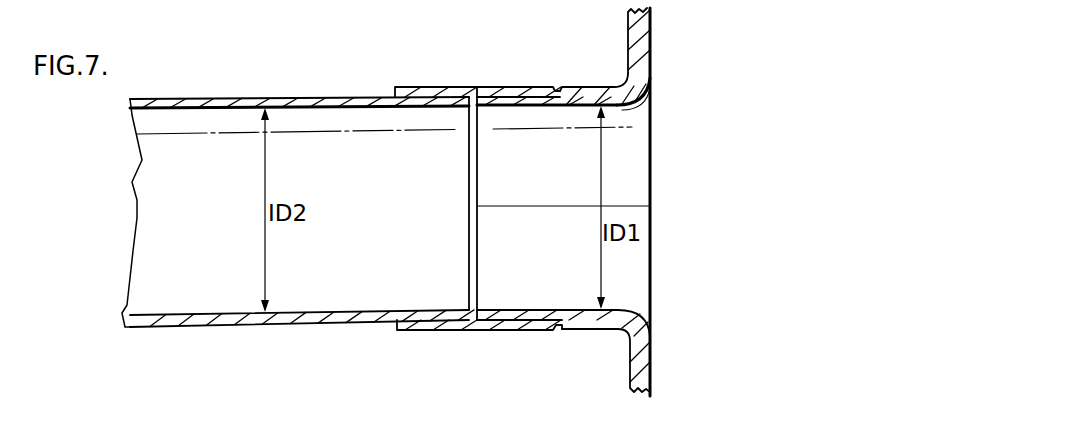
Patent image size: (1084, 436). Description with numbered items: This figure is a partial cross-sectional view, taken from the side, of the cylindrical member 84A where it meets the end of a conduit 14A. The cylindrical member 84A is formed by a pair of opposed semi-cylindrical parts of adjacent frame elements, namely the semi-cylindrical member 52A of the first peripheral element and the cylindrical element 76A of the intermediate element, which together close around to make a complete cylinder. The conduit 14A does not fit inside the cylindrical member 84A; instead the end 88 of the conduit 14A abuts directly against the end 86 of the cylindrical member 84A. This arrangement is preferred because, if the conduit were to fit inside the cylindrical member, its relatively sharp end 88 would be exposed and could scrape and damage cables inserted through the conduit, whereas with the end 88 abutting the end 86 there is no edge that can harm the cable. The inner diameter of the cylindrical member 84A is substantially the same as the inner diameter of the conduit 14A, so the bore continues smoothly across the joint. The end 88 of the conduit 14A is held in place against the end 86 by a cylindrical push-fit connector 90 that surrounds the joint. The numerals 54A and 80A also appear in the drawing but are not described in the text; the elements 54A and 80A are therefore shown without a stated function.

The conduit 14A is at (164, 90).
The cylindrical push-fit connector 90 is at (429, 80).
The cylindrical element of intermediate element 76A is at (560, 332).
The end of the conduit 88 is at (455, 116).
The end of the cylindrical member 86 is at (484, 117).
The semi-cylindrical member of first peripheral element 52A is at (561, 80).
The curved transition portion 54A is at (620, 140).
The cylindrical member 84A is at (664, 204).
The flange 80A is at (630, 279).